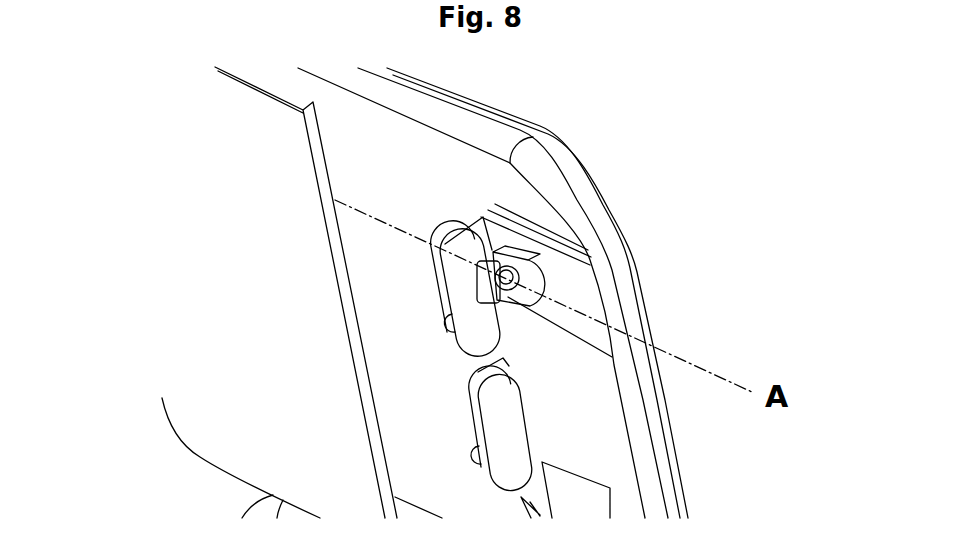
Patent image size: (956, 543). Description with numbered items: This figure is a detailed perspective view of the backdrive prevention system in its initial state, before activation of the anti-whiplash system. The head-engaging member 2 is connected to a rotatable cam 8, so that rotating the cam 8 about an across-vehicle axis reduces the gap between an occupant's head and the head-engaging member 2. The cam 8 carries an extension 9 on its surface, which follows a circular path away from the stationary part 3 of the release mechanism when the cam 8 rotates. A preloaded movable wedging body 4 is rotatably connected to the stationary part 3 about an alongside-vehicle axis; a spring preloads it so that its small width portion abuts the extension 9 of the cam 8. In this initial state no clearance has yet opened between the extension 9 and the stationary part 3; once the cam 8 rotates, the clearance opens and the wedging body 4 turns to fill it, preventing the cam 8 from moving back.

The head-engaging member 2 is at (257, 337).
The stationary part 3 is at (583, 420).
The wedging body 4 is at (540, 290).
The cam 8 is at (480, 323).
The extension 9 is at (492, 270).